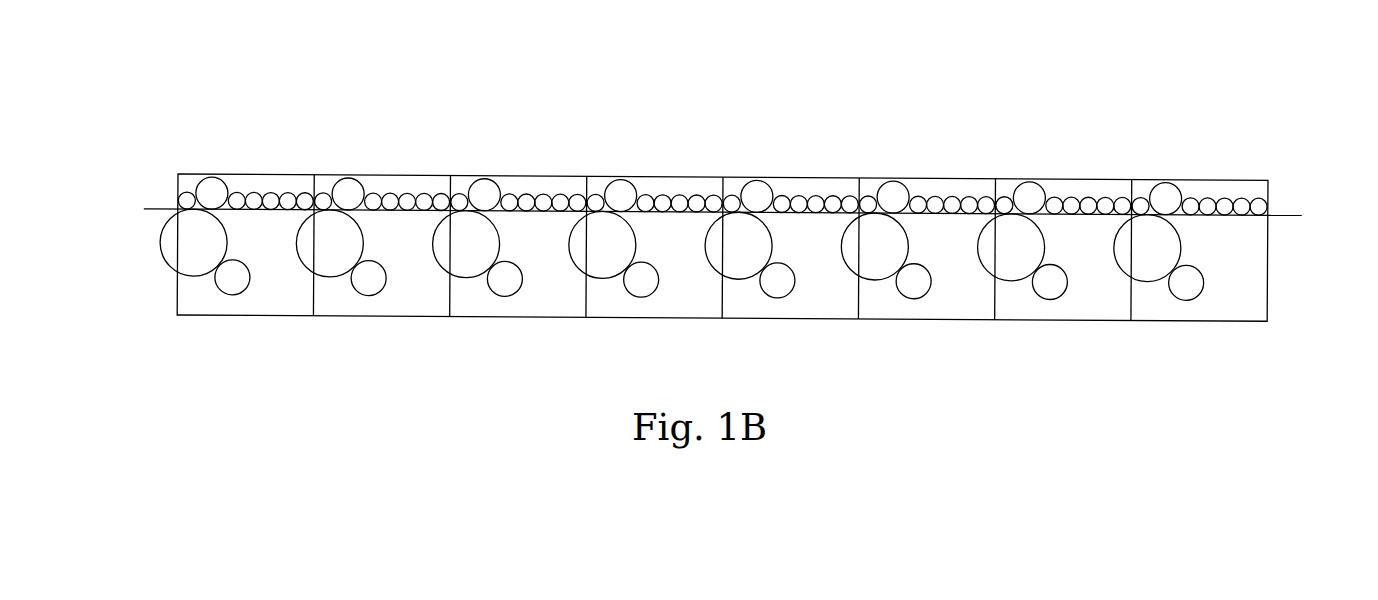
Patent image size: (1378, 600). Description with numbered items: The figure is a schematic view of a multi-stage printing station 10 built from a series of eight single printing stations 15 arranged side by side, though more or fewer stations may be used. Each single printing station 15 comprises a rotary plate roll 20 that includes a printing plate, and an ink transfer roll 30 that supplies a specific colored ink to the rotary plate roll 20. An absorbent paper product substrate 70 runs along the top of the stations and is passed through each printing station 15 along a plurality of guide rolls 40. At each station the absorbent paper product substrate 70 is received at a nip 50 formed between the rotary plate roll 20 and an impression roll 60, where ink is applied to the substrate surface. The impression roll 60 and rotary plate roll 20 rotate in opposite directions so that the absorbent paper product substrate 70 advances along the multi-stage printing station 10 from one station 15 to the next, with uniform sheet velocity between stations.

The multi-stage printing station 10 is at (783, 90).
The single printing station 15 is at (262, 315).
The rotary plate roll 20 is at (156, 240).
The ink transfer roll 30 is at (248, 285).
The guide rolls 40 is at (373, 193).
The nip 50 is at (208, 212).
The impression roll 60 is at (220, 180).
The absorbent paper product substrate 70 is at (1283, 217).